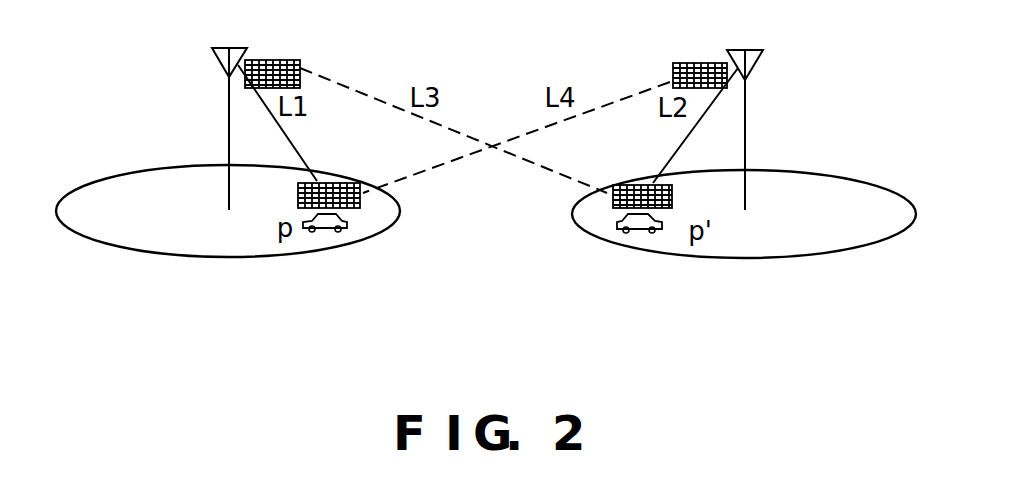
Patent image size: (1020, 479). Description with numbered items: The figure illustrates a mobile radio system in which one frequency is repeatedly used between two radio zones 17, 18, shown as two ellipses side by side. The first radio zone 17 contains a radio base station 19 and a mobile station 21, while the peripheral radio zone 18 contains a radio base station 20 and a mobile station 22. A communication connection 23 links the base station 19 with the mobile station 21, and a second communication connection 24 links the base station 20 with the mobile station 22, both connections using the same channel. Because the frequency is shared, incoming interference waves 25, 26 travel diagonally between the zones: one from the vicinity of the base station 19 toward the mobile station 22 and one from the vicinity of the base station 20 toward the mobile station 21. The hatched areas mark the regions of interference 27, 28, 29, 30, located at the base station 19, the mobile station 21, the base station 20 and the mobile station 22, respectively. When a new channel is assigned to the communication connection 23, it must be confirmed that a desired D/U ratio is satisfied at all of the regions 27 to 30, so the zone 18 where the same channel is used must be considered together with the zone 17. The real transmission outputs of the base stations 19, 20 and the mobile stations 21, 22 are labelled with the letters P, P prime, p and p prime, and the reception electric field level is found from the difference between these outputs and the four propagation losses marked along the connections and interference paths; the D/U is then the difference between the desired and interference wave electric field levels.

The radio zone 17 is at (118, 173).
The radio zone 18 is at (858, 180).
The radio base station 19 is at (215, 63).
The radio base station 20 is at (758, 56).
The mobile station 21 is at (346, 226).
The mobile station 22 is at (618, 226).
The communication connection 23 is at (276, 118).
The communication connection 24 is at (702, 117).
The incoming interference wave 25 is at (375, 93).
The incoming interference wave 26 is at (593, 104).
The region of interference 27 is at (288, 60).
The region of interference 28 is at (343, 183).
The region of interference 29 is at (685, 63).
The region of interference 30 is at (630, 184).